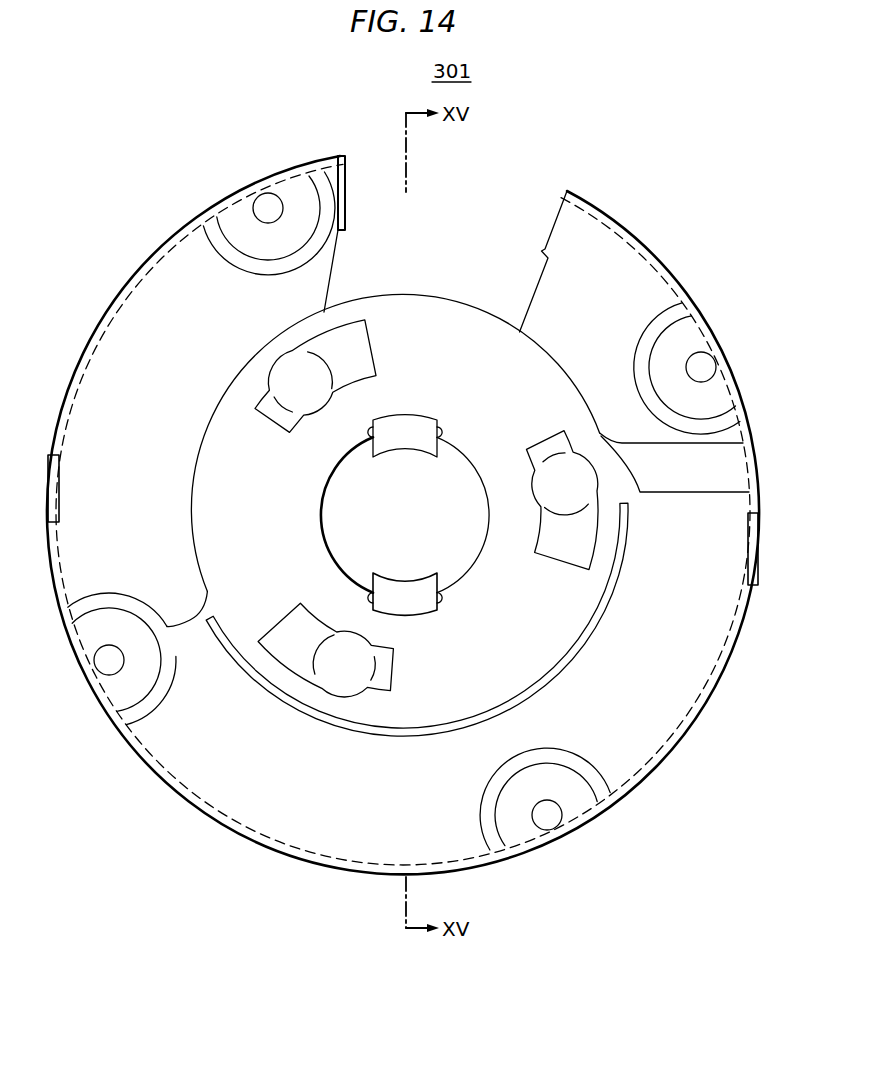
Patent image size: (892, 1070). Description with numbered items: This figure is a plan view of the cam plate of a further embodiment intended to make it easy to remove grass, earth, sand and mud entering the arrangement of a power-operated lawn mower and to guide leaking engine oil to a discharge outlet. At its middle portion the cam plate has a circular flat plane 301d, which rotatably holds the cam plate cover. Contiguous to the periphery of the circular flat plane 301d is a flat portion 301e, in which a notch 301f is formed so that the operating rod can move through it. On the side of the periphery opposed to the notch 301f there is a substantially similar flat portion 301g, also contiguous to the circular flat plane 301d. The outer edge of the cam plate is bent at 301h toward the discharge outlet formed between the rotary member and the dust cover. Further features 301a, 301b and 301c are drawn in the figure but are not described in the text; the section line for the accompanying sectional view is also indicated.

The central hole 301a is at (322, 508).
The keyways 301b is at (400, 590).
The roller pads 301c is at (293, 638).
The circular flat plane 301d is at (553, 645).
The flat portion 301e is at (645, 288).
The notch 301f is at (415, 296).
The flat portion 301g is at (710, 653).
The bent outer edge 301h is at (623, 233).